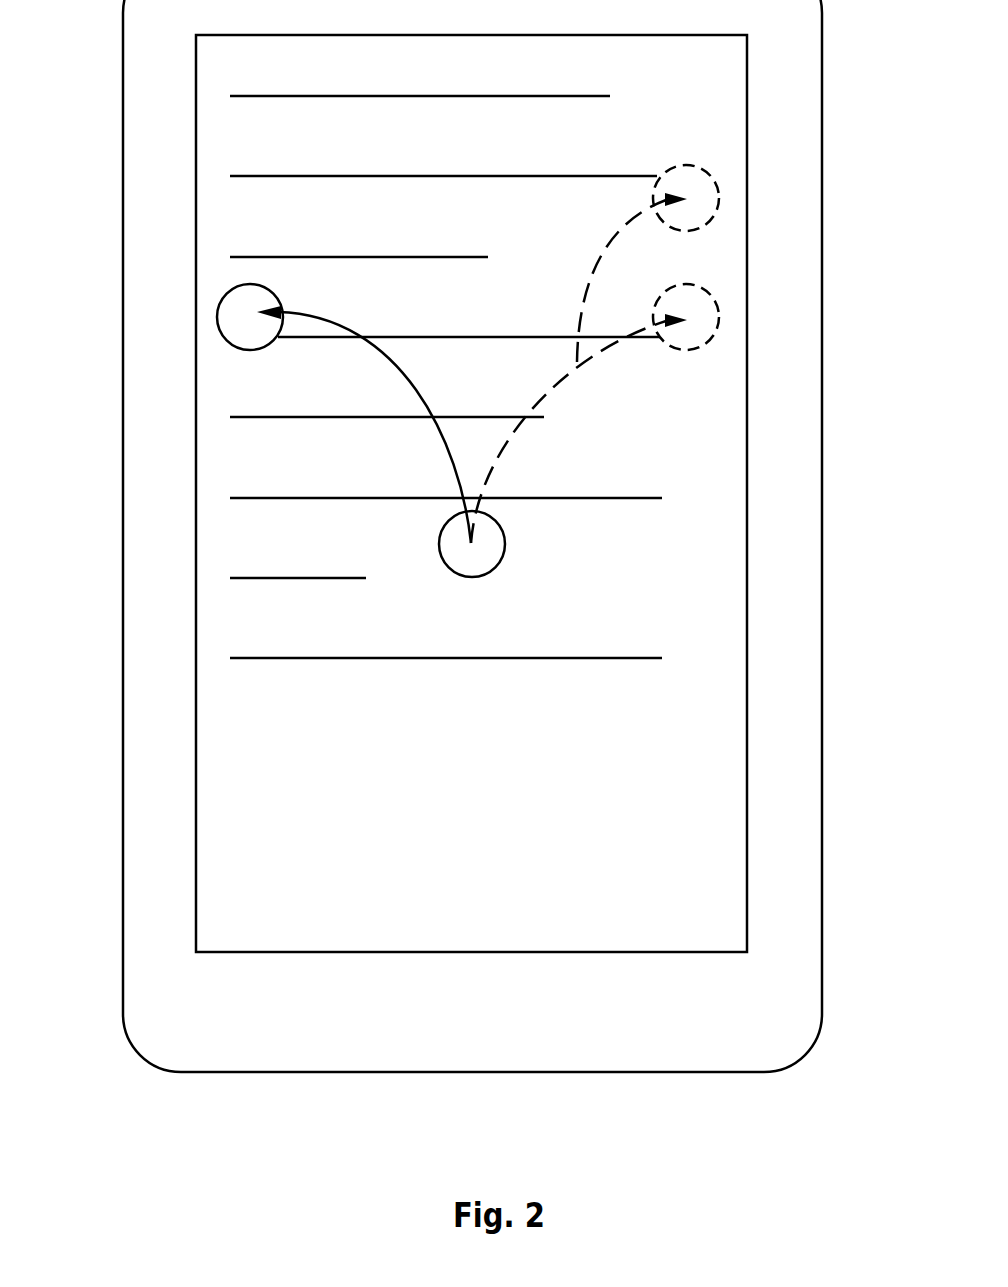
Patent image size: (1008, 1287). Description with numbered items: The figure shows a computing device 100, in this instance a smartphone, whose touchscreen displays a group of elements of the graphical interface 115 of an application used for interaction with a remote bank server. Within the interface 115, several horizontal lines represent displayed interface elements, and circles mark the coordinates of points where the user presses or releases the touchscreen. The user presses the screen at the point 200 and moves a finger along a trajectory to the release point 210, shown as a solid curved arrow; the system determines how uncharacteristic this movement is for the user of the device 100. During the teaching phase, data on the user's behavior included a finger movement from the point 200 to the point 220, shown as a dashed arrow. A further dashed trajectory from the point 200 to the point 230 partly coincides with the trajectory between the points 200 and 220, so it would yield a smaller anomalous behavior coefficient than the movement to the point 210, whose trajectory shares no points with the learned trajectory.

The computing device 100 is at (282, 1072).
The graphical interface 115 is at (528, 952).
The pressing point 200 is at (493, 574).
The release point 210 is at (218, 325).
The point 220 is at (720, 318).
The point 230 is at (720, 200).